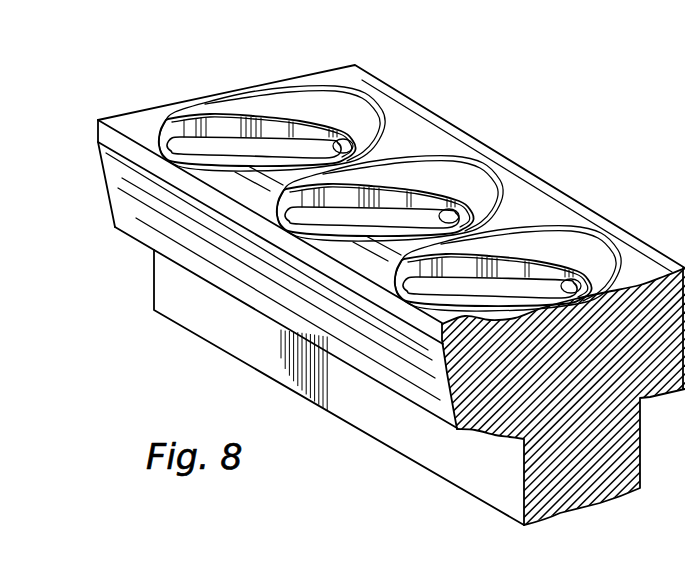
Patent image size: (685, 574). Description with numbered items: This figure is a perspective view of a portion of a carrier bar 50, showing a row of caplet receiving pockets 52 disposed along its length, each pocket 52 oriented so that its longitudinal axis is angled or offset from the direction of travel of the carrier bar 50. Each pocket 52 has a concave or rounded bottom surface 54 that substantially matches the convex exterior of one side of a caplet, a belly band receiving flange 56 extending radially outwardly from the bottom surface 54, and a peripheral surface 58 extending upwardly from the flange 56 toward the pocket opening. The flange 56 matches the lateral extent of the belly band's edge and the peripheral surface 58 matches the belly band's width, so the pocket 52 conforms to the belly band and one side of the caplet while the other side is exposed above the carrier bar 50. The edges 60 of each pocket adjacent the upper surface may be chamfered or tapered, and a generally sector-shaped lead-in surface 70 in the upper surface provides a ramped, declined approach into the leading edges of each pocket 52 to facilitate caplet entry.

The carrier bar 50 is at (630, 185).
The caplet receiving pocket 52 is at (348, 153).
The bottom surface 54 is at (209, 154).
The belly band receiving flange 56 is at (182, 150).
The peripheral surface 58 is at (183, 128).
The edges of the pocket 60 is at (180, 144).
The lead-in surface 70 is at (333, 112).